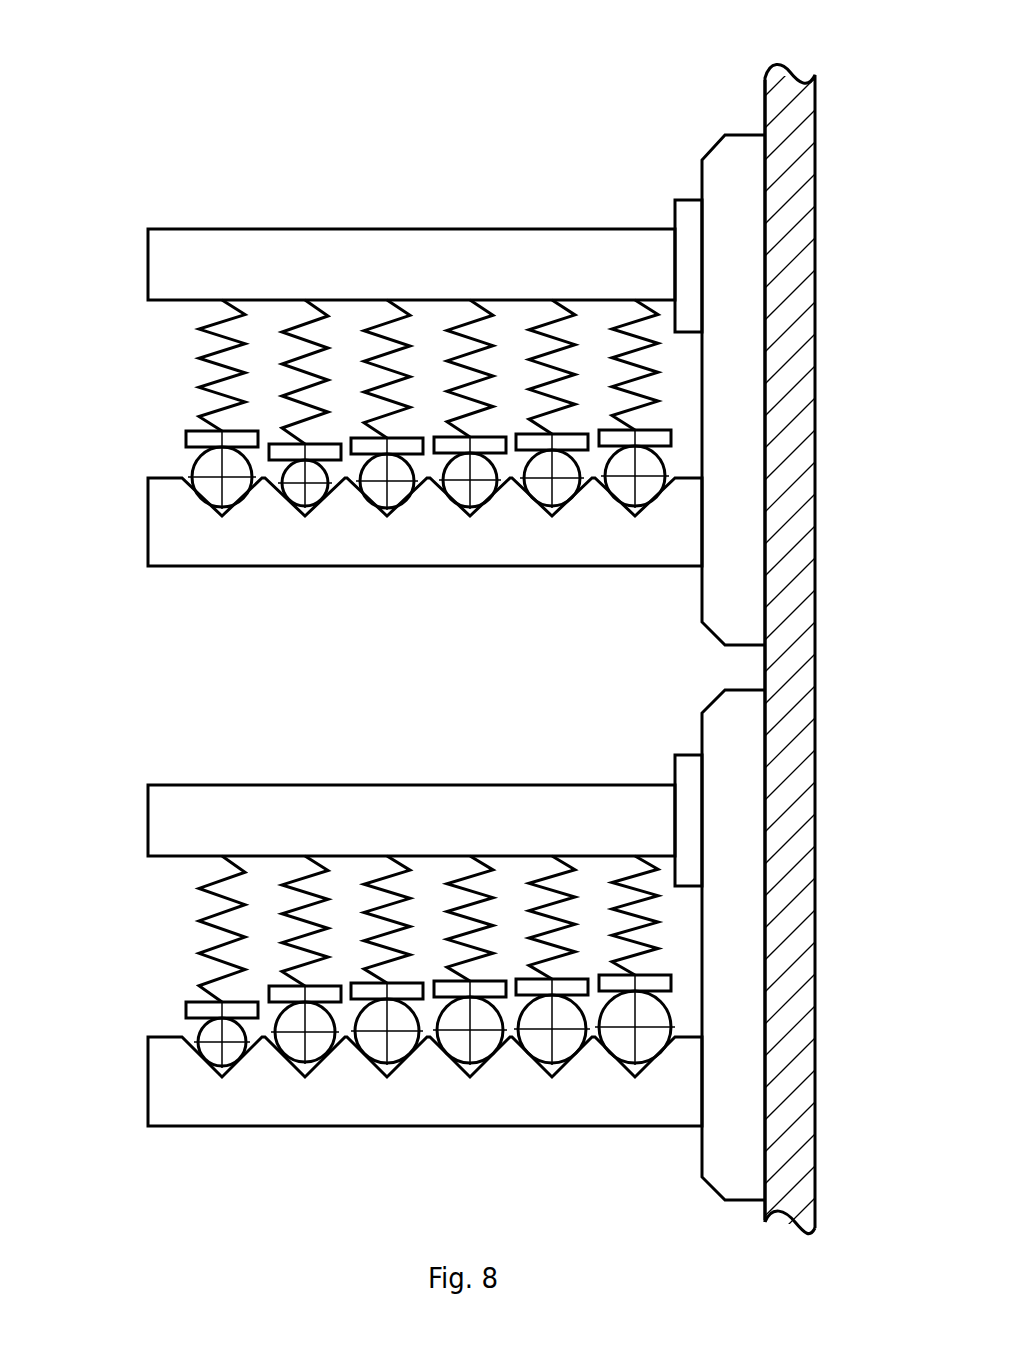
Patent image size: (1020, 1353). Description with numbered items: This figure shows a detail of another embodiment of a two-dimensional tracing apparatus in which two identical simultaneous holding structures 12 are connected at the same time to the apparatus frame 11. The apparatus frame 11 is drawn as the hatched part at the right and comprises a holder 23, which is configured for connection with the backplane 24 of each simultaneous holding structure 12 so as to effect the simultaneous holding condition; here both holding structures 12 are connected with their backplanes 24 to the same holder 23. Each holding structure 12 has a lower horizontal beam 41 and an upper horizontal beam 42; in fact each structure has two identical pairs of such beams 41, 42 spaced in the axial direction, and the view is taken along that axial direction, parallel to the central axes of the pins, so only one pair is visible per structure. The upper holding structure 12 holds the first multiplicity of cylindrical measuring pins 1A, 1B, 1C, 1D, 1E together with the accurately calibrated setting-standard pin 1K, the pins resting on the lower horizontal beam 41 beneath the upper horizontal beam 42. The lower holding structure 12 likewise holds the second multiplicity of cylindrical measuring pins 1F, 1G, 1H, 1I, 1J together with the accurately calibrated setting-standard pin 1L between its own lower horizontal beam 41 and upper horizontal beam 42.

The apparatus frame 11 is at (745, 72).
The simultaneous holding structure 12 is at (378, 622).
The holder of the apparatus frame 23 is at (765, 115).
The backplane of the simultaneous holding structure 24 is at (702, 182).
The lower horizontal beam 41 is at (148, 528).
The upper horizontal beam 42 is at (148, 265).
The cylindrical measuring pin 1A is at (631, 518).
The cylindrical measuring pin 1B is at (548, 518).
The cylindrical measuring pin 1C is at (466, 518).
The cylindrical measuring pin 1D is at (383, 518).
The cylindrical measuring pin 1E is at (301, 518).
The cylindrical measuring pin 1F is at (631, 1079).
The cylindrical measuring pin 1G is at (548, 1079).
The cylindrical measuring pin 1H is at (466, 1079).
The cylindrical measuring pin 1I is at (383, 1079).
The cylindrical measuring pin 1J is at (301, 1079).
The accurately calibrated setting-standard pin 1K is at (218, 518).
The accurately calibrated setting-standard pin 1L is at (218, 1079).